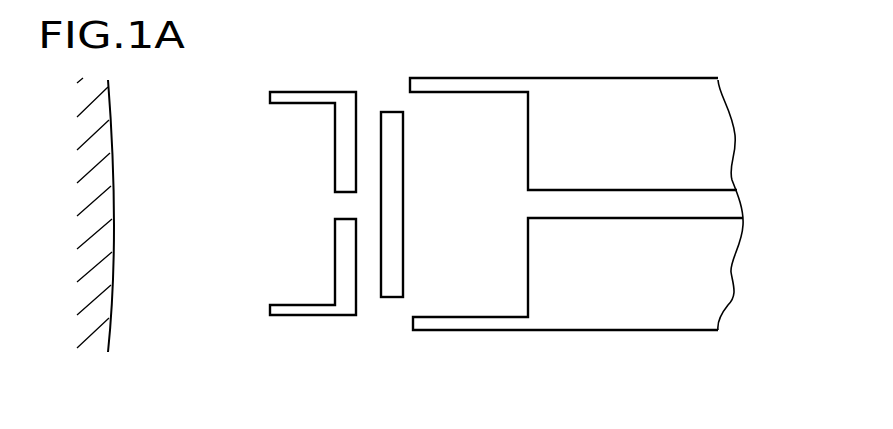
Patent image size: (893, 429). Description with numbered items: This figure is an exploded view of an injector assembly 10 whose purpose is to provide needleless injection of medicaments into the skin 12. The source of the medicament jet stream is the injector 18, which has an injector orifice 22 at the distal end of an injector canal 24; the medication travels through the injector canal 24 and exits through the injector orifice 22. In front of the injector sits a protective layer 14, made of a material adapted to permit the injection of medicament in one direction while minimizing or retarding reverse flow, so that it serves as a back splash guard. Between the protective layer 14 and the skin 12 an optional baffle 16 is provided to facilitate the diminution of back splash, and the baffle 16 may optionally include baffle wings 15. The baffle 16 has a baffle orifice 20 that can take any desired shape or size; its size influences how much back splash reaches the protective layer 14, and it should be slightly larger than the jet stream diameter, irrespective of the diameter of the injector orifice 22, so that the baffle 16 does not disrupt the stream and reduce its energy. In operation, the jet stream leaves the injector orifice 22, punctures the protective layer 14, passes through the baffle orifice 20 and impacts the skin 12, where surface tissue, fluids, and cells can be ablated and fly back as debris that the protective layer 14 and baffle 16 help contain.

The injector assembly 10 is at (633, 345).
The skin 12 is at (113, 305).
The protective layer 14 is at (392, 112).
The baffle wings 15 is at (352, 207).
The baffle 16 is at (352, 292).
The injector 18 is at (643, 78).
The baffle orifice 20 is at (343, 203).
The injector orifice 22 is at (535, 205).
The injector canal 24 is at (703, 205).